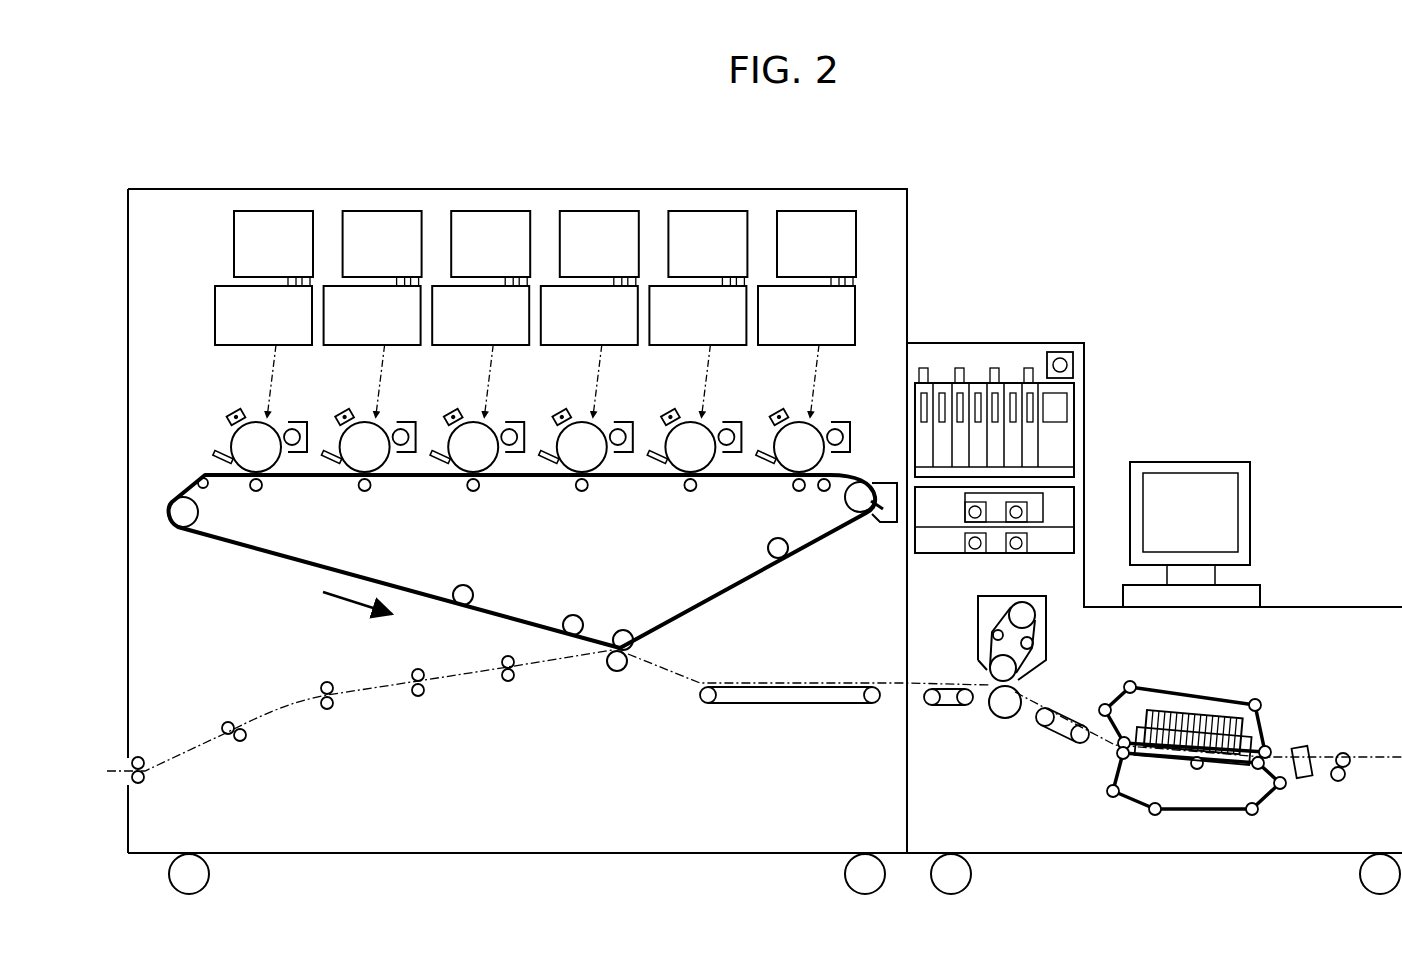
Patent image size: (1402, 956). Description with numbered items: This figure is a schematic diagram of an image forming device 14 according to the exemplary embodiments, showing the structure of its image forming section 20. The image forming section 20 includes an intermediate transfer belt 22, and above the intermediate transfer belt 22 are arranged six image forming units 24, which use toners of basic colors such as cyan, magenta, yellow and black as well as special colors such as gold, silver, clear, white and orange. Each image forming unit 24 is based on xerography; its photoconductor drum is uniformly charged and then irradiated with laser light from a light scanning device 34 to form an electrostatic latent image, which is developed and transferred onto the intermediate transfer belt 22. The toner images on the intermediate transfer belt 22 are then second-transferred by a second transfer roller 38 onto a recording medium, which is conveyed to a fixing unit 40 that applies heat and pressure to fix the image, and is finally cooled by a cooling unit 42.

The image forming system 14 is at (1140, 295).
The image forming section 20 is at (912, 220).
The intermediate transfer belt 22 is at (273, 558).
The image forming units 24 is at (214, 411).
The light scanning device 34 is at (214, 297).
The second transfer roller 38 is at (617, 672).
The fixing unit 40 is at (1048, 633).
The cooling unit 42 is at (1222, 692).